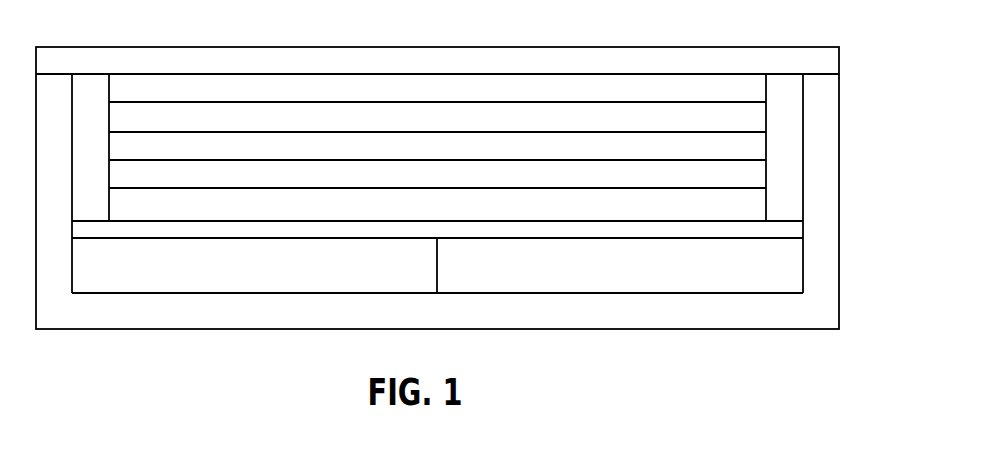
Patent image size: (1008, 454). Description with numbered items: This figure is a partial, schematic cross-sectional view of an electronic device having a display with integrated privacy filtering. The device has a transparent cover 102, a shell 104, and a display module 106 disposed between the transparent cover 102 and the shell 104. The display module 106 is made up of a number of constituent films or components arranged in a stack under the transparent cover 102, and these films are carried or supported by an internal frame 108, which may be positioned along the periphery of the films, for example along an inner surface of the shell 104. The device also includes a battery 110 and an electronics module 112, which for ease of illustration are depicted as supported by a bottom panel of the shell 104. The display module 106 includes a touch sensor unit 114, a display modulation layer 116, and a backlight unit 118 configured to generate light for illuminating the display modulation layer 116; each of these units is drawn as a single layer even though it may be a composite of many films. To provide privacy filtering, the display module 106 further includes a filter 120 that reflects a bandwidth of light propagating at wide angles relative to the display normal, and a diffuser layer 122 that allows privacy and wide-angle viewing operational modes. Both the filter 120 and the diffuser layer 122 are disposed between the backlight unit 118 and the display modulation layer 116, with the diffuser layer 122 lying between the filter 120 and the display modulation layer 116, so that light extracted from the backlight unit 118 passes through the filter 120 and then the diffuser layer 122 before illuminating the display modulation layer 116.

The transparent cover 102 is at (378, 49).
The shell 104 is at (447, 320).
The display module 106 is at (768, 126).
The internal frame 108 is at (793, 165).
The battery 110 is at (222, 276).
The electronics module 112 is at (639, 276).
The touch sensor unit 114 is at (352, 98).
The display modulation layer 116 is at (378, 128).
The backlight unit 118 is at (468, 214).
The filter 120 is at (438, 186).
The diffuser layer 122 is at (408, 156).